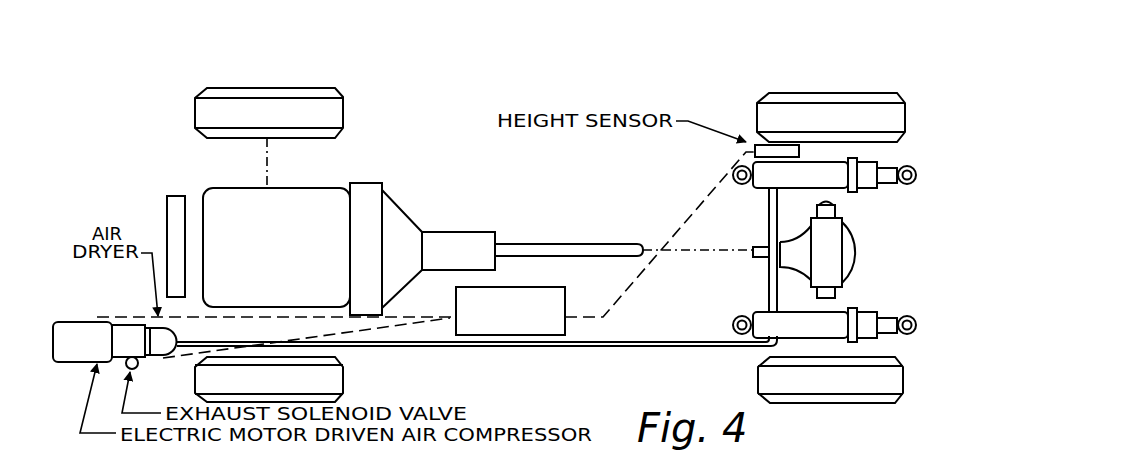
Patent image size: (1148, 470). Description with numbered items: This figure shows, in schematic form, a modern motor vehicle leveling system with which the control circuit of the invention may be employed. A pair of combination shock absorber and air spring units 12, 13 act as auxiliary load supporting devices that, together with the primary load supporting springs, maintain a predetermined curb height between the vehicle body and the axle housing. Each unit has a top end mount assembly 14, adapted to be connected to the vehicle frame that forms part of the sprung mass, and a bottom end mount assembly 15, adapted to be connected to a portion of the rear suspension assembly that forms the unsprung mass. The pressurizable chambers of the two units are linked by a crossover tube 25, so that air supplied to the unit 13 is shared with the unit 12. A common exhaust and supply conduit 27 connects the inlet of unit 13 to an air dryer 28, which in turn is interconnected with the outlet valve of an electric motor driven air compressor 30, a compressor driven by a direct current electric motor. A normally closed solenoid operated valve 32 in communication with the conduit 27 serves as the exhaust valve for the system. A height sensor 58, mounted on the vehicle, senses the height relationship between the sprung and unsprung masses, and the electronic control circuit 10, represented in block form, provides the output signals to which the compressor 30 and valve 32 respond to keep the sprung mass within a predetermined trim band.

The electronic control circuit 10 is at (567, 298).
The combination shock absorber and air spring unit 12 is at (840, 195).
The combination shock absorber and air spring unit 13 is at (845, 308).
The top end mount assembly 14 is at (729, 179).
The bottom end mount assembly 15 is at (905, 167).
The crossover tube 25 is at (770, 264).
The common exhaust and supply conduit 27 is at (450, 349).
The air dryer 28 is at (159, 344).
The electric motor driven air compressor 30 is at (72, 334).
The normally closed solenoid operated valve 32 is at (130, 356).
The height sensor 58 is at (775, 147).